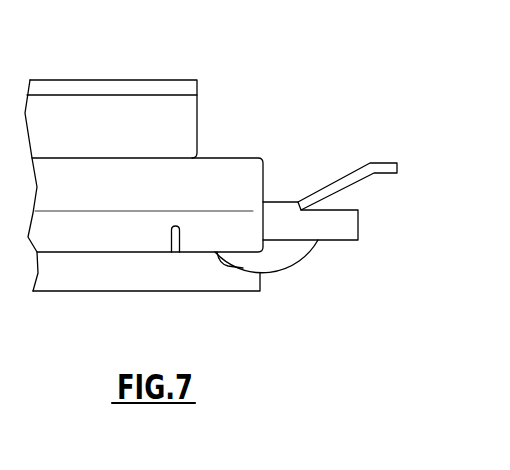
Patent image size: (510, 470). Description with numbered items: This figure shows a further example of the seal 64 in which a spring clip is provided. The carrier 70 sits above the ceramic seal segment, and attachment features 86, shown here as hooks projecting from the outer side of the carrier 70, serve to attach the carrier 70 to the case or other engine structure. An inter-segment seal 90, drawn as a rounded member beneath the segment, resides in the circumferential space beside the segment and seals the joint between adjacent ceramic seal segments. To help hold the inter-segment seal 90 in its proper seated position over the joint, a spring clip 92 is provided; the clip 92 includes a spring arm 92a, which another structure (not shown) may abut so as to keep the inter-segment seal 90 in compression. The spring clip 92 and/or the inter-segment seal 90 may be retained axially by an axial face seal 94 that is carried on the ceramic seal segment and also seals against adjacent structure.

The seal 64 is at (165, 169).
The carrier 70 is at (197, 79).
The attachment features 86 is at (117, 74).
The axial face seal 94 is at (220, 175).
The spring clip 92 is at (283, 202).
The spring arm 92a is at (339, 178).
The inter-segment seal 90 is at (289, 280).